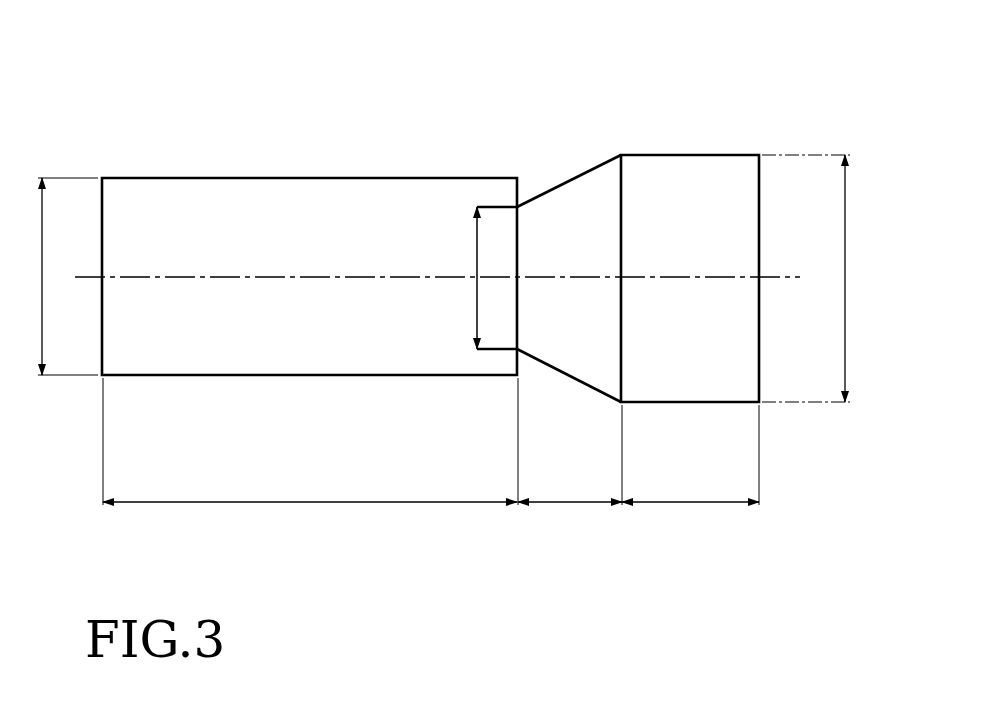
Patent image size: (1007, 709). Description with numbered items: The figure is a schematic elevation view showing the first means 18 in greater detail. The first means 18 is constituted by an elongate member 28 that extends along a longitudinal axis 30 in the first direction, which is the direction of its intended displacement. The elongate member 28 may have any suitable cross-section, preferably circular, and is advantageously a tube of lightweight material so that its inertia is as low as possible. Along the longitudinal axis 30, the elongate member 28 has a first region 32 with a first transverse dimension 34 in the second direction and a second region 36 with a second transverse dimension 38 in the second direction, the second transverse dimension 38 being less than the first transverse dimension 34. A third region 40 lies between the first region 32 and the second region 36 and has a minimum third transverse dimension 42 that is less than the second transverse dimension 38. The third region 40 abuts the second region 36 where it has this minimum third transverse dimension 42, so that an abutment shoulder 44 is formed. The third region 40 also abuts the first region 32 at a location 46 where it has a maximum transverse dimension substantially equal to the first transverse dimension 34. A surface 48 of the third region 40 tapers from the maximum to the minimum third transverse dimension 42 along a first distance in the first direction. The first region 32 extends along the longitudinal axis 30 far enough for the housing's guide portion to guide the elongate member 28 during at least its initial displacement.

The first means 18 is at (718, 77).
The elongate member 28 is at (172, 188).
The longitudinal axis 30 is at (782, 280).
The first region 32 is at (690, 473).
The first transverse dimension 34 is at (823, 278).
The second region 36 is at (310, 460).
The second transverse dimension 38 is at (53, 276).
The third region 40 is at (570, 472).
The minimum third transverse dimension 42 is at (475, 255).
The abutment shoulder 44 is at (523, 193).
The location 46 is at (621, 155).
The surface 48 is at (586, 258).